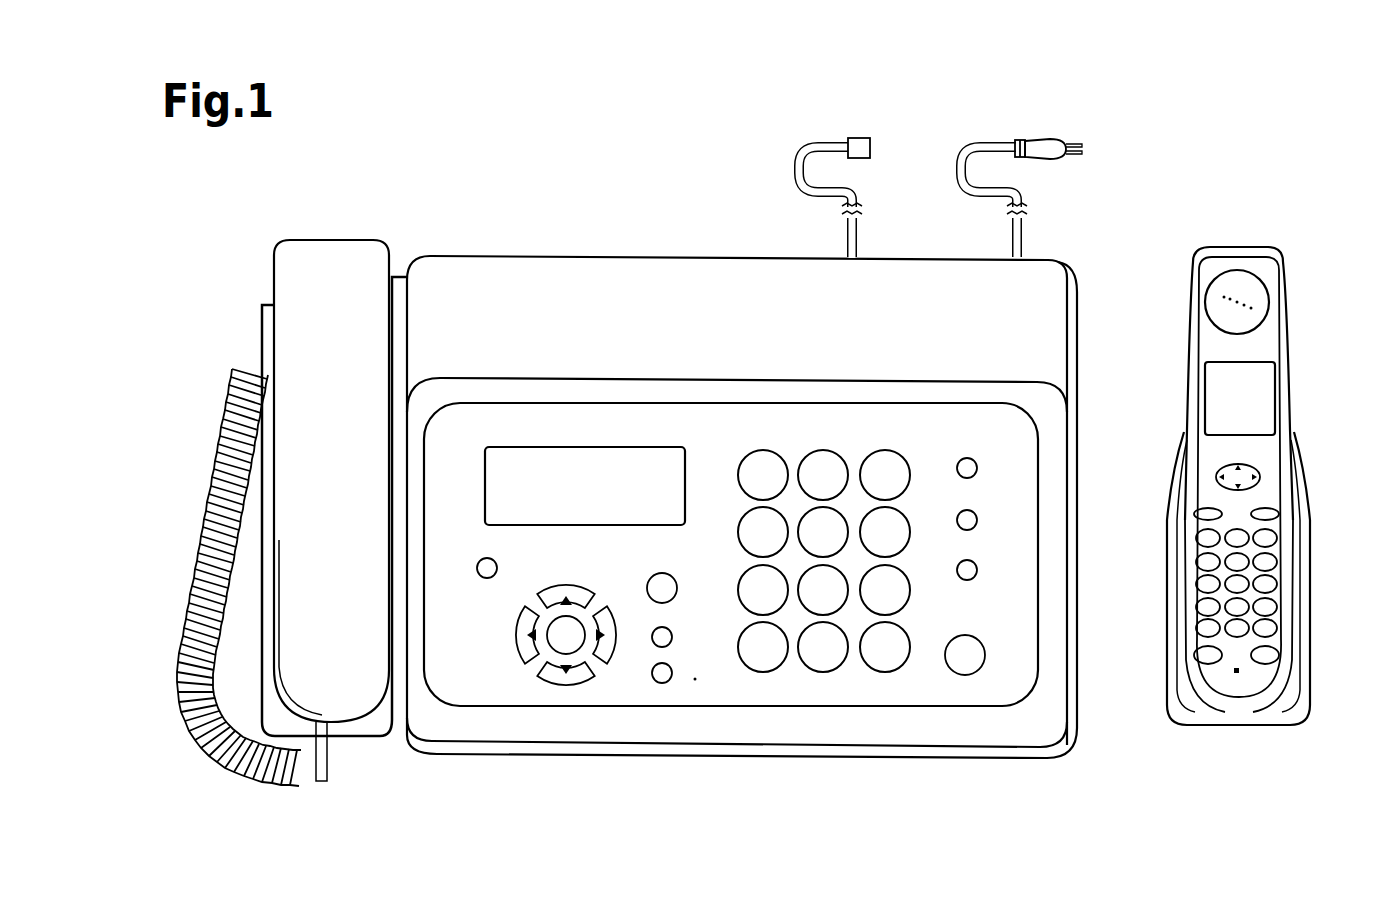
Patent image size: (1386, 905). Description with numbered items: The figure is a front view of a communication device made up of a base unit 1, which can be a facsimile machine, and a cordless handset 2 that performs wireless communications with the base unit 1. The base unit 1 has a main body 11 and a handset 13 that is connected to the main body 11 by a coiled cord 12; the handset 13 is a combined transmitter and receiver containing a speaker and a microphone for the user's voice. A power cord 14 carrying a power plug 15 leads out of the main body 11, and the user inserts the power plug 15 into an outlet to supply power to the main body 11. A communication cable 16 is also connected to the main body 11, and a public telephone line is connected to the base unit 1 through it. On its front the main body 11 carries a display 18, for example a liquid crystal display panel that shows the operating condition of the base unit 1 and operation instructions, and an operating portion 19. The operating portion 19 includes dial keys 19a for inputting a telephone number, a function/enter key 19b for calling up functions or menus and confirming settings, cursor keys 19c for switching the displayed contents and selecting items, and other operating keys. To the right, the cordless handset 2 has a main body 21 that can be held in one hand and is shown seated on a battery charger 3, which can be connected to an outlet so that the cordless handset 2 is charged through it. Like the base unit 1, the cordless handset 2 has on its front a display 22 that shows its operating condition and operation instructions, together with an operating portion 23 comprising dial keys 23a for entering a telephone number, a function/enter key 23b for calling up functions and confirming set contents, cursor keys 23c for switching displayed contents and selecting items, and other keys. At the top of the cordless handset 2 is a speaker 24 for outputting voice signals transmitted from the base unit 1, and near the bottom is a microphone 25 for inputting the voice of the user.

The base unit 1 is at (600, 126).
The cordless handset 2 is at (1233, 215).
The battery charger 3 is at (1297, 688).
The main body 11 is at (730, 272).
The coiled cord 12 is at (208, 508).
The handset 13 is at (338, 252).
The power cord 14 is at (973, 148).
The power plug 15 is at (1055, 140).
The communication cable 16 is at (807, 148).
The display 18 is at (562, 452).
The operating portion 19 is at (741, 695).
The dial keys 19a is at (823, 667).
The function/enter key 19b is at (545, 648).
The cursor keys 19c is at (580, 673).
The main body 21 is at (1273, 342).
The display 22 is at (1265, 395).
The operating portion 23 is at (1279, 549).
The dial keys 23a is at (1240, 633).
The function/enter key 23b is at (1275, 515).
The cursor keys 23c is at (1248, 472).
The speaker 24 is at (1257, 292).
The microphone 25 is at (1224, 681).